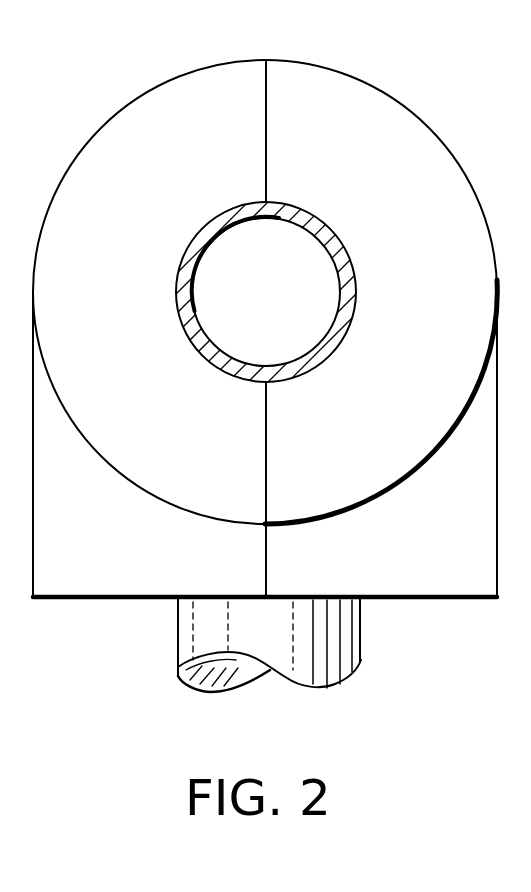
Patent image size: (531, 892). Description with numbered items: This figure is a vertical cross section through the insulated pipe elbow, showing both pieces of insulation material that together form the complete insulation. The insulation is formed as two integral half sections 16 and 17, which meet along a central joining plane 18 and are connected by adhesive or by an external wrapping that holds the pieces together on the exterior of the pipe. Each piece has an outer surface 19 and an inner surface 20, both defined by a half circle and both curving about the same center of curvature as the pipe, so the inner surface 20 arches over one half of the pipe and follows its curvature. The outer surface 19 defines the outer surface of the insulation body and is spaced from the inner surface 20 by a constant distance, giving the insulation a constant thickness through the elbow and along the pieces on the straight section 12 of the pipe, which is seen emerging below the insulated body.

The straight section 12 is at (343, 633).
The half section 16 is at (176, 110).
The half section 17 is at (342, 108).
The central joining plane 18 is at (270, 136).
The outer surface 19 is at (112, 110).
The inner surface 20 is at (208, 240).